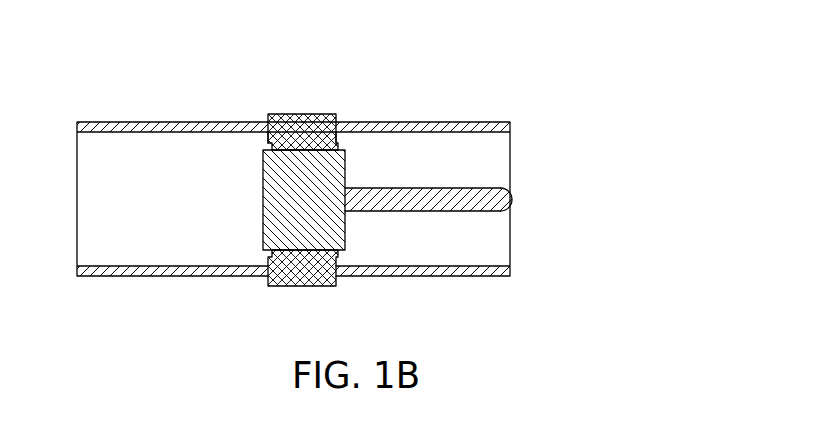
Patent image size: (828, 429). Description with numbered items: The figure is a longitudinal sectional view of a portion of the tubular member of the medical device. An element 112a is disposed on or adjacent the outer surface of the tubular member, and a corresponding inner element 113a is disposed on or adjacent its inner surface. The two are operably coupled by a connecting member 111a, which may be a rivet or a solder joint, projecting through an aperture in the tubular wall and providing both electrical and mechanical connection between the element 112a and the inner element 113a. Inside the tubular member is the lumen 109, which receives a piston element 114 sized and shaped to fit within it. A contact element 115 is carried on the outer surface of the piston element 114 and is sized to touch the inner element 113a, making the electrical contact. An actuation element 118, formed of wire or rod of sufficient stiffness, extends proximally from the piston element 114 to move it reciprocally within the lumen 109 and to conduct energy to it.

The lumen 109 is at (218, 208).
The connecting member 111a is at (296, 128).
The element 112a is at (286, 114).
The inner element 113a is at (268, 135).
The piston element 114 is at (344, 223).
The contact element 115 is at (337, 144).
The actuation element 118 is at (512, 212).